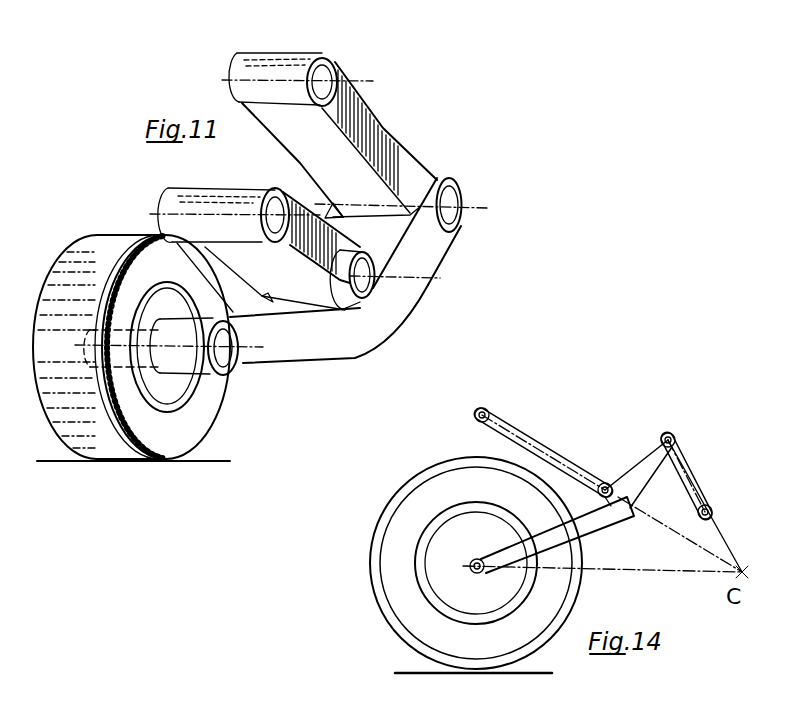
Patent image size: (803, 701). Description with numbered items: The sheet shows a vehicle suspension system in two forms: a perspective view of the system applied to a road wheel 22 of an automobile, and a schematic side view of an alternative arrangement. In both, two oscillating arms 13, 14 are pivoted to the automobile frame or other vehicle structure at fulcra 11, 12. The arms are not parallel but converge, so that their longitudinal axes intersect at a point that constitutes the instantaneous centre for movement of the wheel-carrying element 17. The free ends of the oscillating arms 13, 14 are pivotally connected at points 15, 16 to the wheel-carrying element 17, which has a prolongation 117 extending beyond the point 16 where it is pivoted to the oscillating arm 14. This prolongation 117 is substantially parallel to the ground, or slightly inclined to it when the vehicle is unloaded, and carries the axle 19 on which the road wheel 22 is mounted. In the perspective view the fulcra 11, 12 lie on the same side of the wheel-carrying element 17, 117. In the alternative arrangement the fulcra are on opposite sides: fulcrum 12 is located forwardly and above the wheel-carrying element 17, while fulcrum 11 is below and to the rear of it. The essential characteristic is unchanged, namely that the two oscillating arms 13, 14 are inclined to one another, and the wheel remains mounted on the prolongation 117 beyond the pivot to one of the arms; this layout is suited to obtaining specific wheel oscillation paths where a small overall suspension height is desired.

In FIG. 11, the fulcrum 11 is at (333, 67).
In FIG. 14, the fulcrum 11 is at (712, 508).
In FIG. 11, the fulcrum 12 is at (276, 212).
In FIG. 14, the fulcrum 12 is at (483, 410).
In FIG. 11, the oscillating arm 13 is at (367, 117).
In FIG. 14, the oscillating arm 13 is at (698, 482).
In FIG. 11, the oscillating arm 14 is at (313, 252).
In FIG. 14, the oscillating arm 14 is at (528, 435).
In FIG. 11, the pivotal connection 15 is at (460, 186).
In FIG. 14, the pivotal connection 15 is at (670, 433).
In FIG. 11, the pivotal connection 16 is at (377, 302).
In FIG. 14, the pivotal connection 16 is at (605, 483).
In FIG. 11, the wheel-carrying element 17 is at (436, 247).
In FIG. 14, the wheel-carrying element 17 is at (643, 488).
In FIG. 11, the axle 19 is at (228, 376).
In FIG. 14, the axle 19 is at (476, 577).
In FIG. 11, the road wheel 22 is at (126, 236).
In FIG. 11, the prolongation 117 is at (322, 350).
In FIG. 14, the prolongation 117 is at (594, 522).